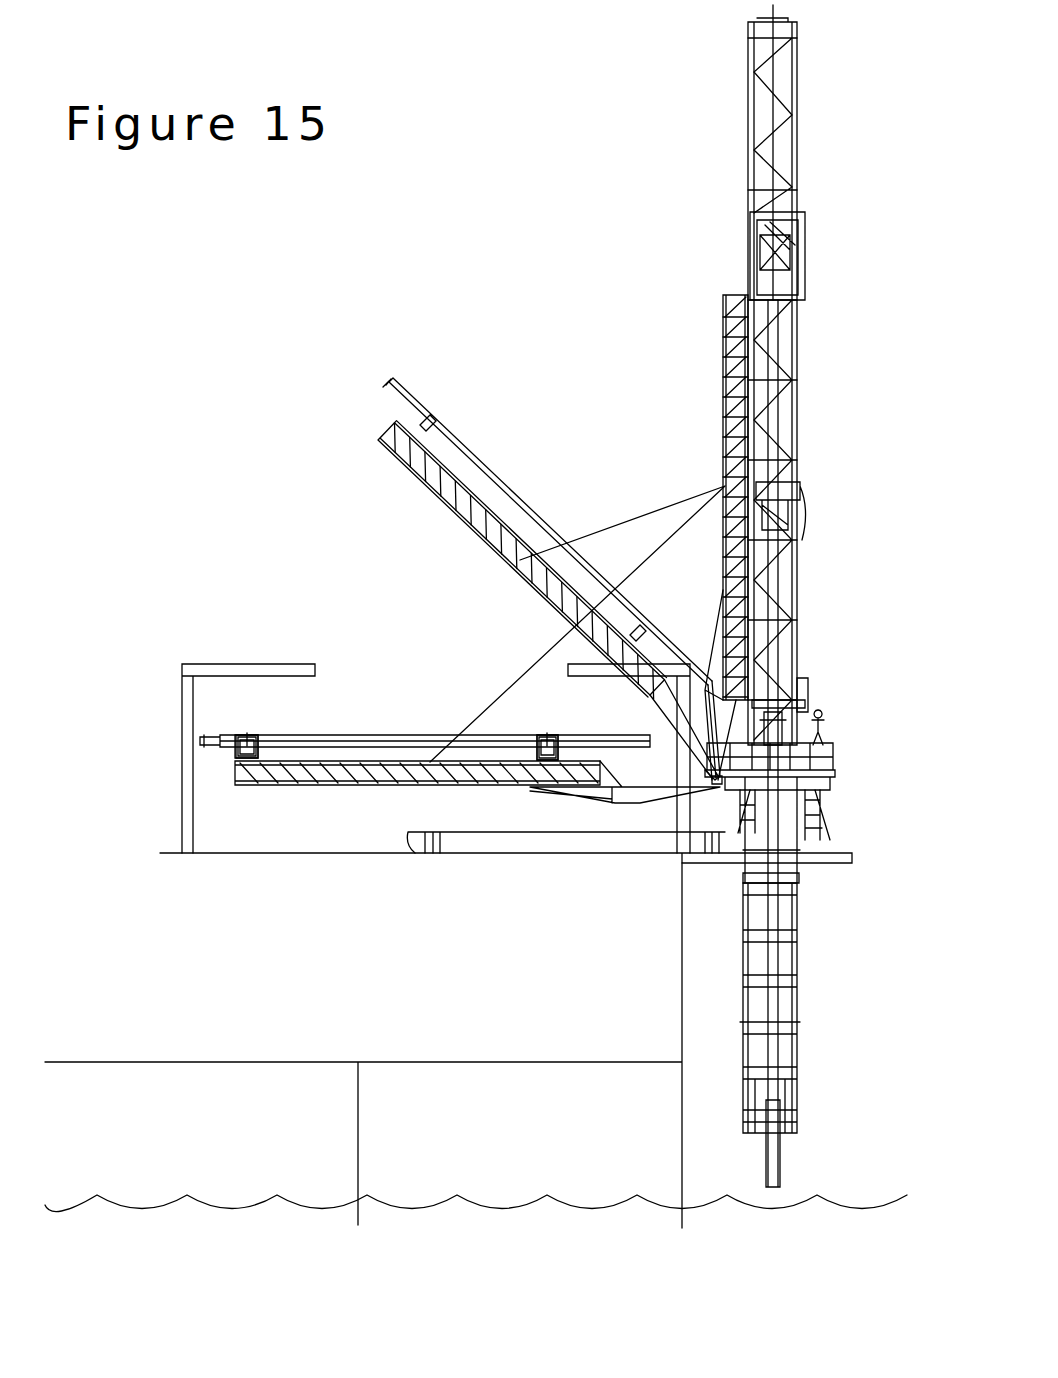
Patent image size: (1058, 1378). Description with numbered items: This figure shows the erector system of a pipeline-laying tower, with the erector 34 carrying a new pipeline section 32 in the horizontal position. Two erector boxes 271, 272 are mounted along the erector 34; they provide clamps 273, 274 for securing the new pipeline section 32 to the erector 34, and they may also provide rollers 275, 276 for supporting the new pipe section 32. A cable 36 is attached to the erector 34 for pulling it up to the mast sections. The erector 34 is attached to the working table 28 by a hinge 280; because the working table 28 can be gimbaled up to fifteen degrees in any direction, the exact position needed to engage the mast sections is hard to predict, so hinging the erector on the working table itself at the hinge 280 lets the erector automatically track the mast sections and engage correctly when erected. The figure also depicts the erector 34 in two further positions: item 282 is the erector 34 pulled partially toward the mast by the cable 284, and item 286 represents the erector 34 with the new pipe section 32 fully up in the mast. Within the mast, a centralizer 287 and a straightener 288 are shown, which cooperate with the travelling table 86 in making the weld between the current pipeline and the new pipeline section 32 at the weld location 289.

The working table 28 is at (828, 778).
The new pipeline section 32 is at (352, 734).
The erector 34 is at (340, 787).
The cable 36 is at (472, 723).
The travelling table 86 is at (802, 262).
The erector box 271 is at (246, 738).
The clamp 273 is at (248, 738).
The roller 275 is at (250, 738).
The erector box 272 is at (540, 735).
The clamp 274 is at (545, 735).
The roller 276 is at (552, 735).
The hinge 280 is at (718, 784).
The erector pulled partially to the mast 282 is at (380, 437).
The cable 284 is at (650, 512).
The erector fully up in the mast 286 is at (722, 355).
The centralizer 287 is at (808, 698).
The straightener 288 is at (806, 490).
The weld location 289 is at (782, 728).